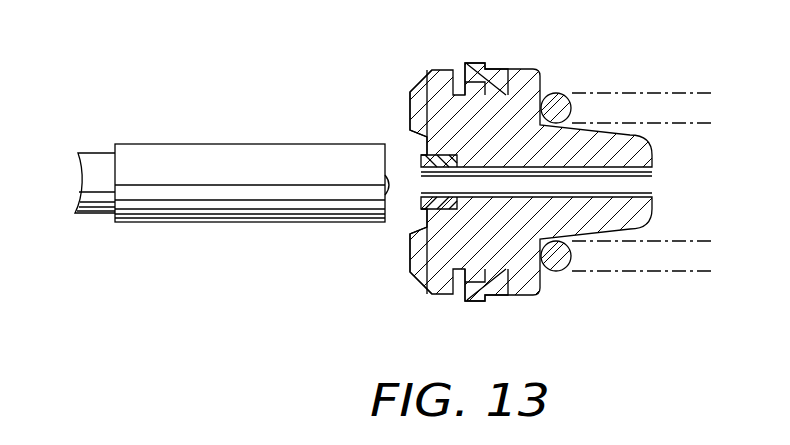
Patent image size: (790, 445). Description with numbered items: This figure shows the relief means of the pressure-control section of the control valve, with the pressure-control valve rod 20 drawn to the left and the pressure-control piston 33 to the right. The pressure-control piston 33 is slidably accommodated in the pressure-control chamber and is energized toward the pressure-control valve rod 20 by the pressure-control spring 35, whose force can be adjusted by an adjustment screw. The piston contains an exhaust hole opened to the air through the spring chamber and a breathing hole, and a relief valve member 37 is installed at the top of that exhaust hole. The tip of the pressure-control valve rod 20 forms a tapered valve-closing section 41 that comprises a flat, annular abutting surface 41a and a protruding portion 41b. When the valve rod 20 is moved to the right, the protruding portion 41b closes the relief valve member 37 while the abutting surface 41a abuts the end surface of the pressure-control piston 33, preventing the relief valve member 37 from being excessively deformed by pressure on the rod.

The pressure-control valve rod 20 is at (233, 153).
The pressure-control piston 33 is at (440, 294).
The pressure-control spring 35 is at (558, 93).
The relief valve member 37 is at (412, 232).
The valve-closing section 41 is at (398, 137).
The abutting surface 41a is at (392, 143).
The protruding portion 41b is at (385, 193).